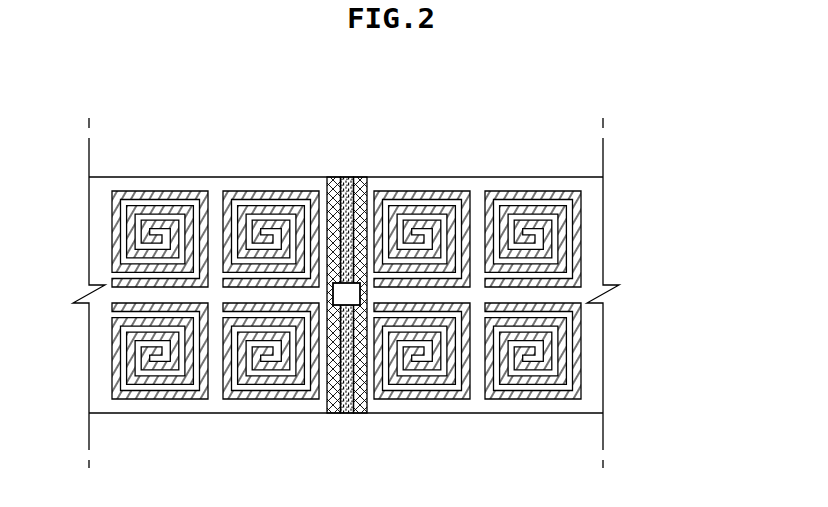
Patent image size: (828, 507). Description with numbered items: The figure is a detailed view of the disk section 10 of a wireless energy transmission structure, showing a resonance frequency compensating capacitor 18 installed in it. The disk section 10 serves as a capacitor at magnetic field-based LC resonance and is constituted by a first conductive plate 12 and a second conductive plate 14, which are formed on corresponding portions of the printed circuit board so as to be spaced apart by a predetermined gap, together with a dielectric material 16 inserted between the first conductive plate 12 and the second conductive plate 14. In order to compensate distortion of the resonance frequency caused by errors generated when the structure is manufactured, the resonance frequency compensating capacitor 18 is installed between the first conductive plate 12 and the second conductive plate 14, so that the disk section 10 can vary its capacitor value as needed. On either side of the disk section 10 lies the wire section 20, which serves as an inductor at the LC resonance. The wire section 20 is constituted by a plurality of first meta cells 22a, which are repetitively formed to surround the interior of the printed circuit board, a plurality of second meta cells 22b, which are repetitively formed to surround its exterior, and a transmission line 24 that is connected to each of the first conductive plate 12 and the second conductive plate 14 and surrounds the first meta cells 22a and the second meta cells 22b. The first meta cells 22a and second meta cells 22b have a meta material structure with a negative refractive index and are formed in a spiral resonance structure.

The disk section 10 is at (351, 277).
The first conductive plate 12 is at (330, 176).
The second conductive plate 14 is at (365, 176).
The dielectric material 16 is at (348, 176).
The resonance frequency compensating capacitor 18 is at (334, 305).
The wire section 20 is at (399, 293).
The first meta cells 22a is at (393, 351).
The second meta cells 22b is at (581, 249).
The transmission line 24 is at (593, 212).